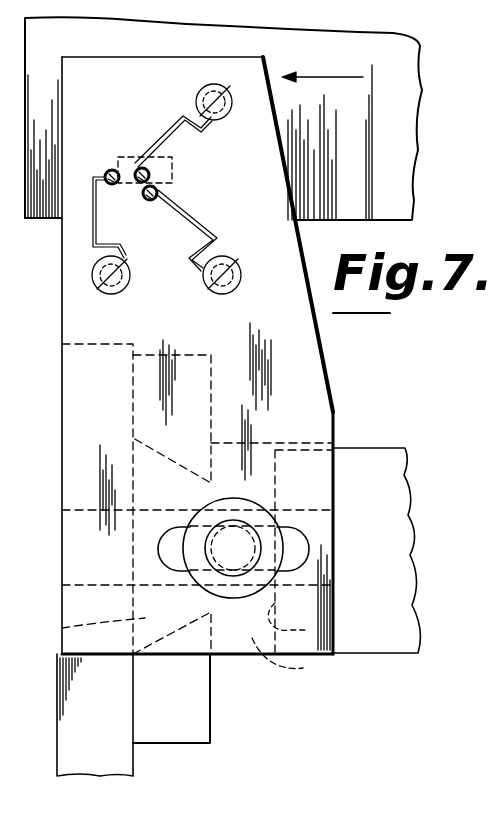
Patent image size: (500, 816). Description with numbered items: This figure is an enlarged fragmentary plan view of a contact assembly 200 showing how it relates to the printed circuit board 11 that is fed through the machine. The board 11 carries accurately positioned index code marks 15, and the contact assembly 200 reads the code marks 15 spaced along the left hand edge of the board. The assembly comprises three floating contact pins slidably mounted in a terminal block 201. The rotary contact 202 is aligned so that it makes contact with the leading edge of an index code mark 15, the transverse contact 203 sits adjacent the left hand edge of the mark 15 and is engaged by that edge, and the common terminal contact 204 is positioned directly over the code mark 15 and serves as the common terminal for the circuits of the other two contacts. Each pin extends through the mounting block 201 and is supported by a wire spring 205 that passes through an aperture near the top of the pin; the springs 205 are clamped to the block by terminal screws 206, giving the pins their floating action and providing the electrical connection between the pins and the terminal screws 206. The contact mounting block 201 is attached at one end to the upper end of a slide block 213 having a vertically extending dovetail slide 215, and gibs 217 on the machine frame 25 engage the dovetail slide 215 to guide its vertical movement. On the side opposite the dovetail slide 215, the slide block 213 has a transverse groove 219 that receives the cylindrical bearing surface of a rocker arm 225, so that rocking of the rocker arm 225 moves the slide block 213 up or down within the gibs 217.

The printed circuit board 11 is at (398, 172).
The index code mark 15 is at (172, 165).
The frame 25 is at (67, 737).
The contact assembly 200 is at (335, 405).
The terminal block 201 is at (292, 337).
The rotary contact 202 is at (112, 170).
The transverse contact 203 is at (150, 200).
The common terminal contact 204 is at (150, 170).
The wire spring 205 is at (160, 134).
The terminal screw 206 is at (197, 96).
The slide block 213 is at (295, 659).
The dovetail slide 215 is at (56, 628).
The gib 217 is at (133, 424).
The transverse groove 219 is at (310, 622).
The rocker arm 225 is at (398, 492).